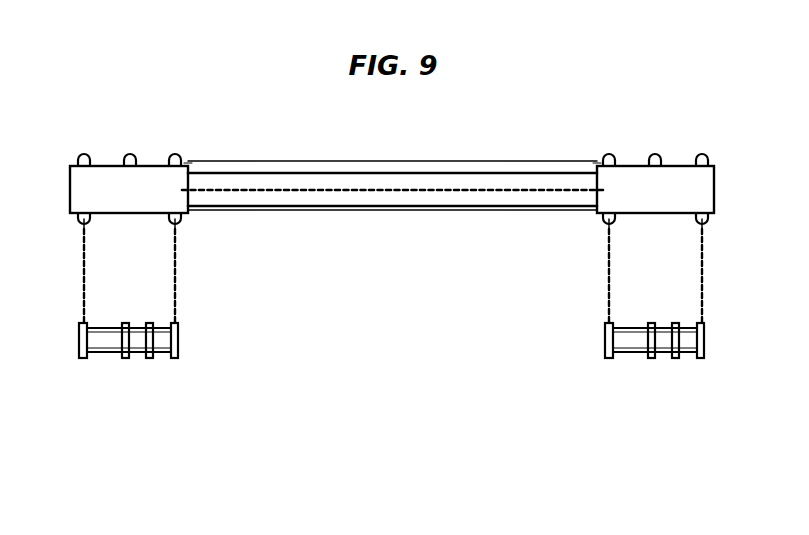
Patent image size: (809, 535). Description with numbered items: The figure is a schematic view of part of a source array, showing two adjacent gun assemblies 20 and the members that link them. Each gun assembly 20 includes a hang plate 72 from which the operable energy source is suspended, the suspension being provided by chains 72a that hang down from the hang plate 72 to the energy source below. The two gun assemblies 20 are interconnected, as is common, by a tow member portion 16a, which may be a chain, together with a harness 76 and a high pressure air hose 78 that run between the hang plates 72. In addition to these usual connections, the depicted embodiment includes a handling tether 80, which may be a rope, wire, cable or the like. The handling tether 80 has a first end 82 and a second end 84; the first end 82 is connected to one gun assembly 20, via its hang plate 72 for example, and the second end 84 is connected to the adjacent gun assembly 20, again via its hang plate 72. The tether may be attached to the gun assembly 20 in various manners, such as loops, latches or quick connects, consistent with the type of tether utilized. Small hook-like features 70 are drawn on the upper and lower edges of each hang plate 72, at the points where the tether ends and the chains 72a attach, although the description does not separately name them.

The tow member portion 16a is at (483, 192).
The gun assembly 20 is at (137, 358).
The hooks 70 is at (130, 158).
The hang plate 72 is at (392, 189).
The chains 72a is at (84, 273).
The harness 76 is at (412, 168).
The high pressure air hose 78 is at (311, 209).
The handling tether 80 is at (348, 160).
The first end 82 is at (187, 161).
The second end 84 is at (595, 160).